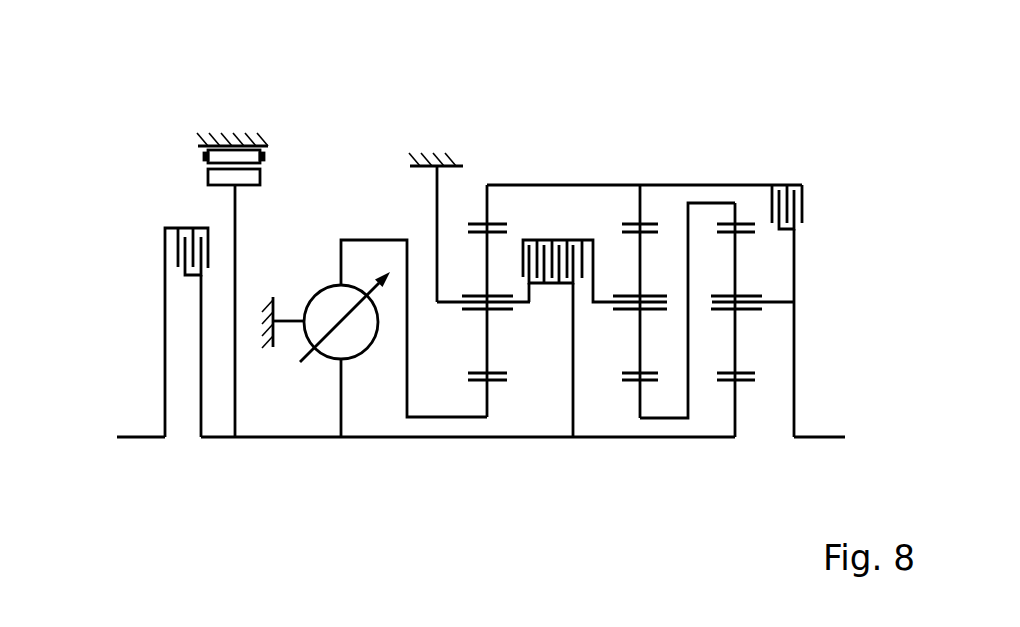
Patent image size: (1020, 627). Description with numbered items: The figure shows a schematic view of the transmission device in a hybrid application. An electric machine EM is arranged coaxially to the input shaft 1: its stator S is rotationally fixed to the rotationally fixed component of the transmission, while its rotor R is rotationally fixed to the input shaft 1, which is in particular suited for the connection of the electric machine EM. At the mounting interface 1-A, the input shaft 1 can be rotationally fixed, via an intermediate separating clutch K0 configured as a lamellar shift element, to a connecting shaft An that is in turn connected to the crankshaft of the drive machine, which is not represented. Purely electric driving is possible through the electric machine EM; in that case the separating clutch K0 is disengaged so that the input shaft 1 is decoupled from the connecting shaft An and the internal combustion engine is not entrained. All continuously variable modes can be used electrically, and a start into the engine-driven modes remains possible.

The electric machine EM is at (231, 112).
The stator S is at (204, 157).
The rotor R is at (208, 185).
The separating clutch K0 is at (160, 268).
The connecting shaft An is at (142, 439).
The mounting interface 1-A is at (217, 439).
The input shaft 1 is at (293, 439).